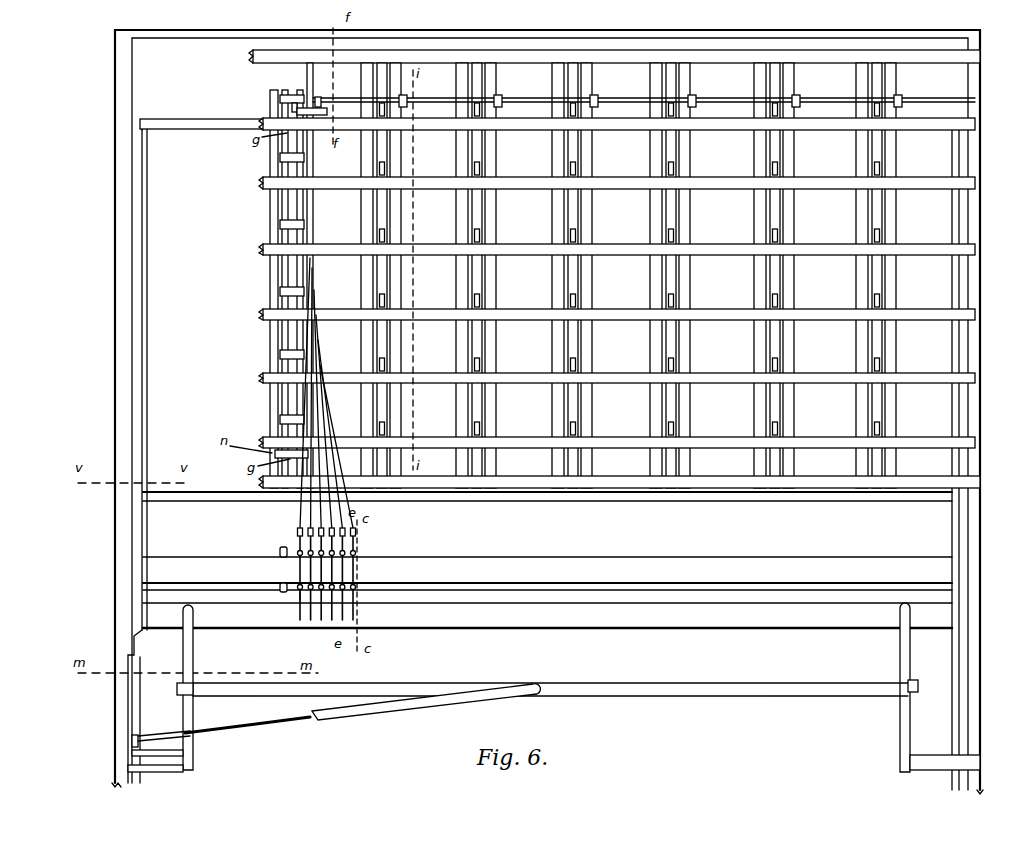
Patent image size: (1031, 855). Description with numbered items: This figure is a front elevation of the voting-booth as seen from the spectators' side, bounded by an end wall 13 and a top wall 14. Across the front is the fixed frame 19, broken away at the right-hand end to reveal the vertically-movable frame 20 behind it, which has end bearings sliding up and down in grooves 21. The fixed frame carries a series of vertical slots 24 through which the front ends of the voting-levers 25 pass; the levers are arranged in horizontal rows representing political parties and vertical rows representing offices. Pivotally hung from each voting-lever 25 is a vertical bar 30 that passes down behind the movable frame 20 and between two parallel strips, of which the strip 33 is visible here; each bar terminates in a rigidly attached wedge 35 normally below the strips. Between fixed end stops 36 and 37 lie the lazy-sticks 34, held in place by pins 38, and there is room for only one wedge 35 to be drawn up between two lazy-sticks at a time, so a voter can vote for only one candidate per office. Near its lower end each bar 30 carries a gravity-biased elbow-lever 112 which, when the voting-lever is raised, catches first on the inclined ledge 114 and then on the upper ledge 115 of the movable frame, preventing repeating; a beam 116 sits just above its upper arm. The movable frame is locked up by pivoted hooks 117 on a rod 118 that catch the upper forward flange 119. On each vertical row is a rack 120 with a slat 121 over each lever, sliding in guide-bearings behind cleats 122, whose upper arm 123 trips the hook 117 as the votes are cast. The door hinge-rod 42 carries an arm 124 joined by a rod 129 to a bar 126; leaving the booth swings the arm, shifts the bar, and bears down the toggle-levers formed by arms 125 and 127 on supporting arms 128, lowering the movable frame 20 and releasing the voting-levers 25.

The end wall 13 is at (982, 234).
The top wall 14 is at (541, 48).
The fixed frame 19 is at (272, 163).
The movable frame 20 is at (147, 345).
The grooves 21 is at (134, 466).
The vertical slots 24 is at (376, 273).
The voting-levers 25 is at (668, 108).
The vertical bar 30 is at (318, 352).
The parallel strip 33 is at (547, 570).
The lazy-sticks 34 is at (298, 556).
The wedges 35 is at (299, 598).
The end stop 36 is at (282, 548).
The end stop 37 is at (358, 560).
The pins 38 is at (356, 541).
The hinge-rod 42 is at (140, 692).
The elbow-lever 112 is at (355, 600).
The inclined ledge 114 is at (547, 617).
The upper ledge 115 is at (547, 598).
The beam 116 is at (230, 502).
The pivoted hooks 117 is at (412, 100).
The rod 118 is at (520, 98).
The upper forward flange 119 is at (210, 113).
The vertical rack 120 is at (299, 330).
The slat 121 is at (280, 224).
The cleats 122 is at (278, 98).
The upper arm 123 is at (328, 111).
The arm 124 is at (163, 735).
The toggle-lever arm 125 is at (194, 648).
The bar 126 is at (417, 682).
The toggle-lever arm 127 is at (194, 752).
The supporting arm 128 is at (172, 770).
The rod 129 is at (347, 716).